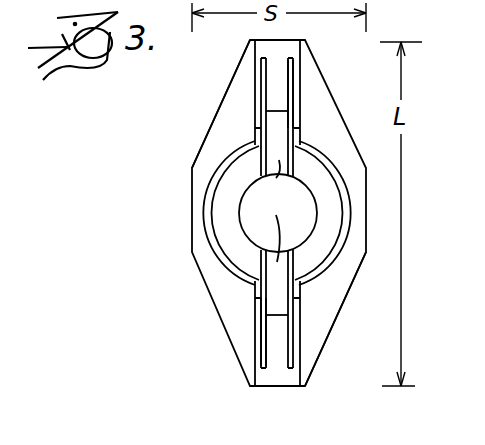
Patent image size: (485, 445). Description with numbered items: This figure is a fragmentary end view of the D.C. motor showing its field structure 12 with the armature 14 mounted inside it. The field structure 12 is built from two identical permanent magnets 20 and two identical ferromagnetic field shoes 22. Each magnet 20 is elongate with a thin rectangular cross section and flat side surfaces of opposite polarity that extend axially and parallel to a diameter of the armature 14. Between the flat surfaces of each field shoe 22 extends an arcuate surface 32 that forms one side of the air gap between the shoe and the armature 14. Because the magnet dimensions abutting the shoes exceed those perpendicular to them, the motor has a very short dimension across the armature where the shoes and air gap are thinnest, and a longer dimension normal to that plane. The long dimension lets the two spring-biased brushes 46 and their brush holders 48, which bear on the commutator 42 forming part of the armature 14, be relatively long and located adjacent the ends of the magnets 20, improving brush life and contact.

The field structure 12 is at (210, 308).
The armature 14 is at (222, 241).
The permanent magnets 20 is at (273, 43).
The field shoes 22 is at (240, 98).
The arcuate surface 32 is at (216, 164).
The commutator 42 is at (239, 213).
The brushes 46 is at (274, 211).
The brush holders 48 is at (291, 88).